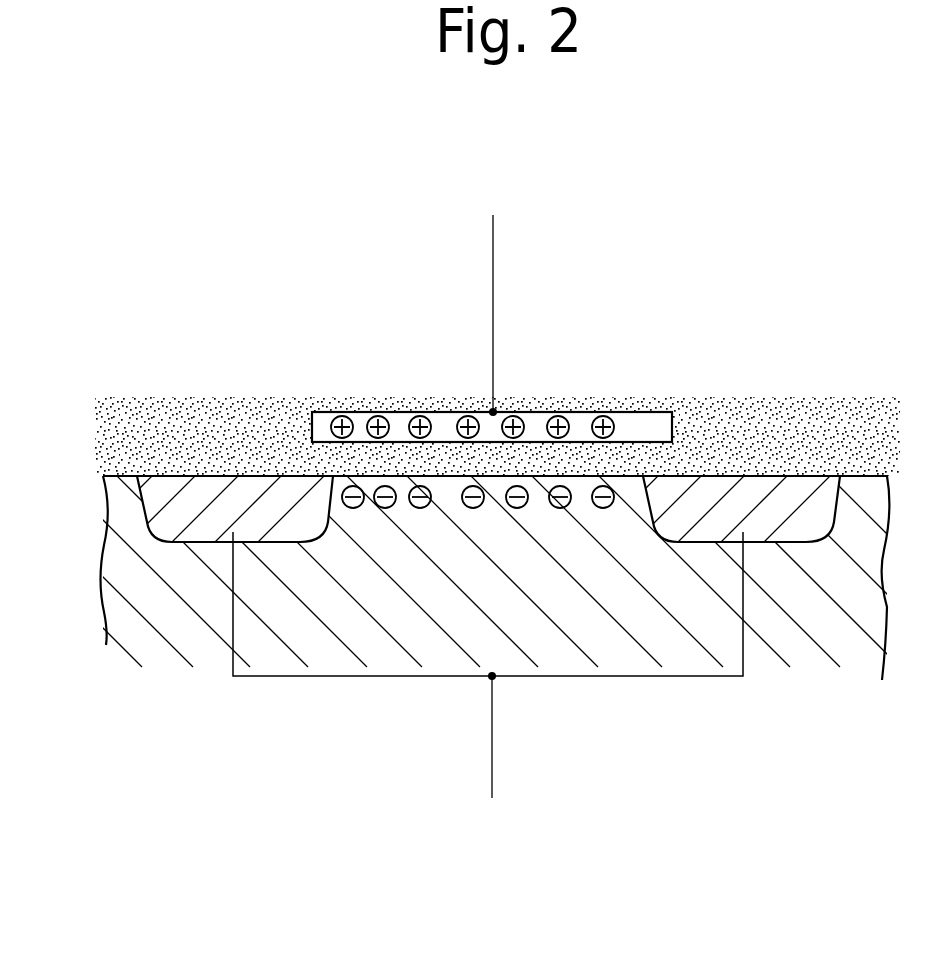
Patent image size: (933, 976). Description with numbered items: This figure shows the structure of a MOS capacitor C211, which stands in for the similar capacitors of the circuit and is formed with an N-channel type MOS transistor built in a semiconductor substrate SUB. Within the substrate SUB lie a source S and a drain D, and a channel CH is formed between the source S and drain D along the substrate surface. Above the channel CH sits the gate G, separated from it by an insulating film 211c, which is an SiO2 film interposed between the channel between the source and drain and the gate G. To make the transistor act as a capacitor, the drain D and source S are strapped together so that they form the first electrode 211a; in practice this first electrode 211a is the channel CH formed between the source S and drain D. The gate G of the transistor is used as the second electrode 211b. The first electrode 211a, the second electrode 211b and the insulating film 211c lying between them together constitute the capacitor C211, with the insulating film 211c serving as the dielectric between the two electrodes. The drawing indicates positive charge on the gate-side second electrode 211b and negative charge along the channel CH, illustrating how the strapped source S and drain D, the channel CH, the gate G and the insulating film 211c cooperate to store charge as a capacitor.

The MOS capacitor C211 is at (580, 153).
The first electrode 211a is at (555, 683).
The second electrode 211b is at (637, 412).
The insulating film 211c is at (667, 458).
The semiconductor substrate SUB is at (119, 488).
The gate G is at (467, 315).
The source S is at (205, 510).
The drain D is at (712, 510).
The channel CH is at (445, 500).